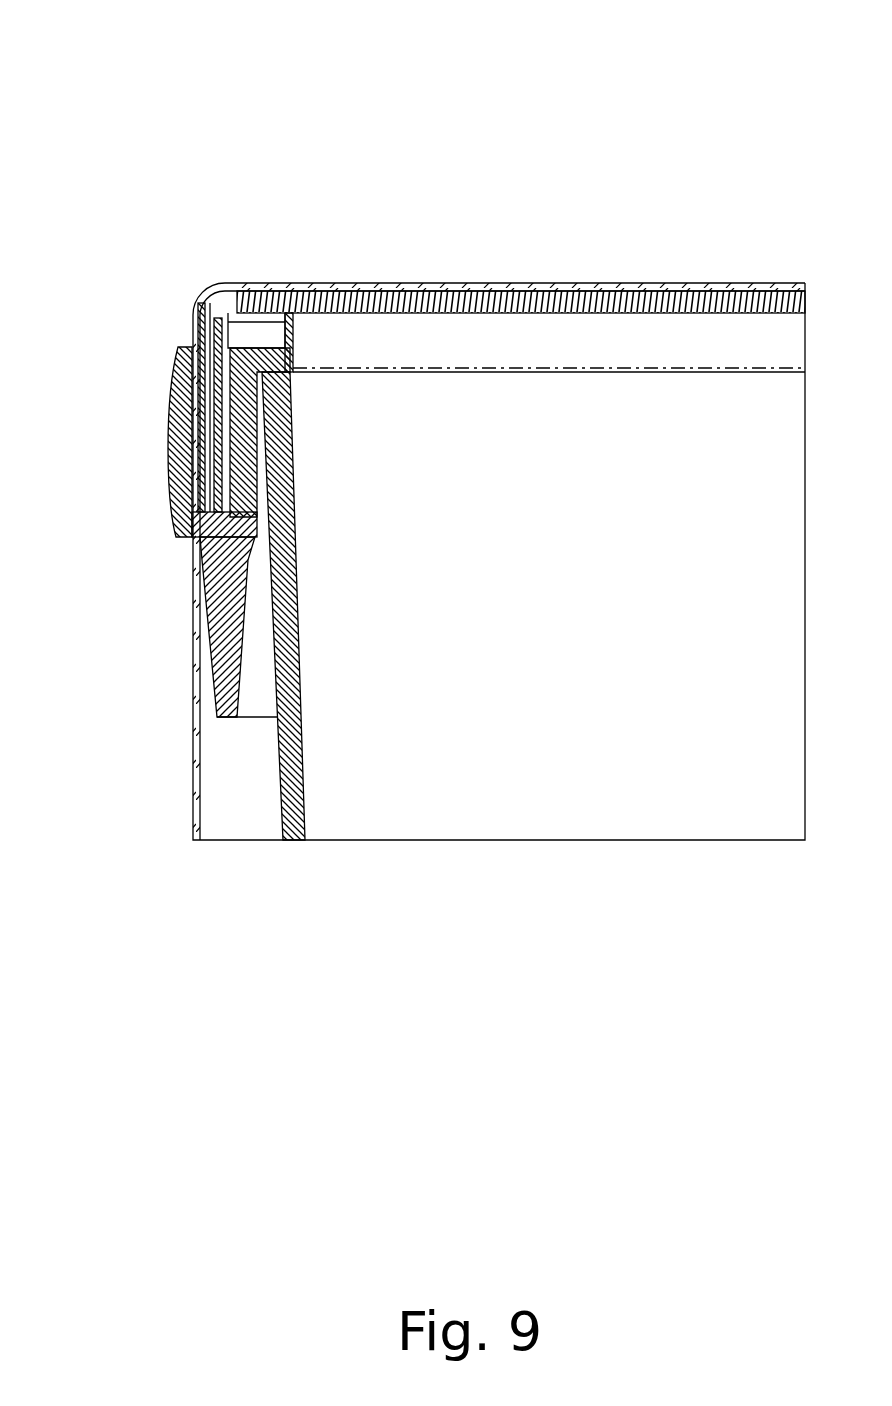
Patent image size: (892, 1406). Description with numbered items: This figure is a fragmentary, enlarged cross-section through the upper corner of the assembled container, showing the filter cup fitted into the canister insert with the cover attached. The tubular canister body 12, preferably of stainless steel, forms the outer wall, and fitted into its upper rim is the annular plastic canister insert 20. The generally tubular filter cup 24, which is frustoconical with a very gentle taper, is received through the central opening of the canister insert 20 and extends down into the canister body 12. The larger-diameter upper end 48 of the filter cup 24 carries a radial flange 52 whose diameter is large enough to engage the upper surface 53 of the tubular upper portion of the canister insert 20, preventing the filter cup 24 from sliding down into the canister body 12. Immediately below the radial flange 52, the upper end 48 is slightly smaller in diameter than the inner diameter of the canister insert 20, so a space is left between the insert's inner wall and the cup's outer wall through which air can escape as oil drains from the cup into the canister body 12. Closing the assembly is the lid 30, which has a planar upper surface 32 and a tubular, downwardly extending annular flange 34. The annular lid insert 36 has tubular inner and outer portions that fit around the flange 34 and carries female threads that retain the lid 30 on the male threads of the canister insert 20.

The canister body 12 is at (190, 797).
The canister insert 20 is at (203, 588).
The filter cup 24 is at (307, 702).
The lid 30 is at (196, 281).
The planar upper surface 32 is at (428, 282).
The annular flange 34 is at (192, 327).
The lid insert 36 is at (158, 443).
The upper end 48 is at (285, 460).
The radial flange 52 is at (248, 333).
The upper surface 53 is at (212, 360).